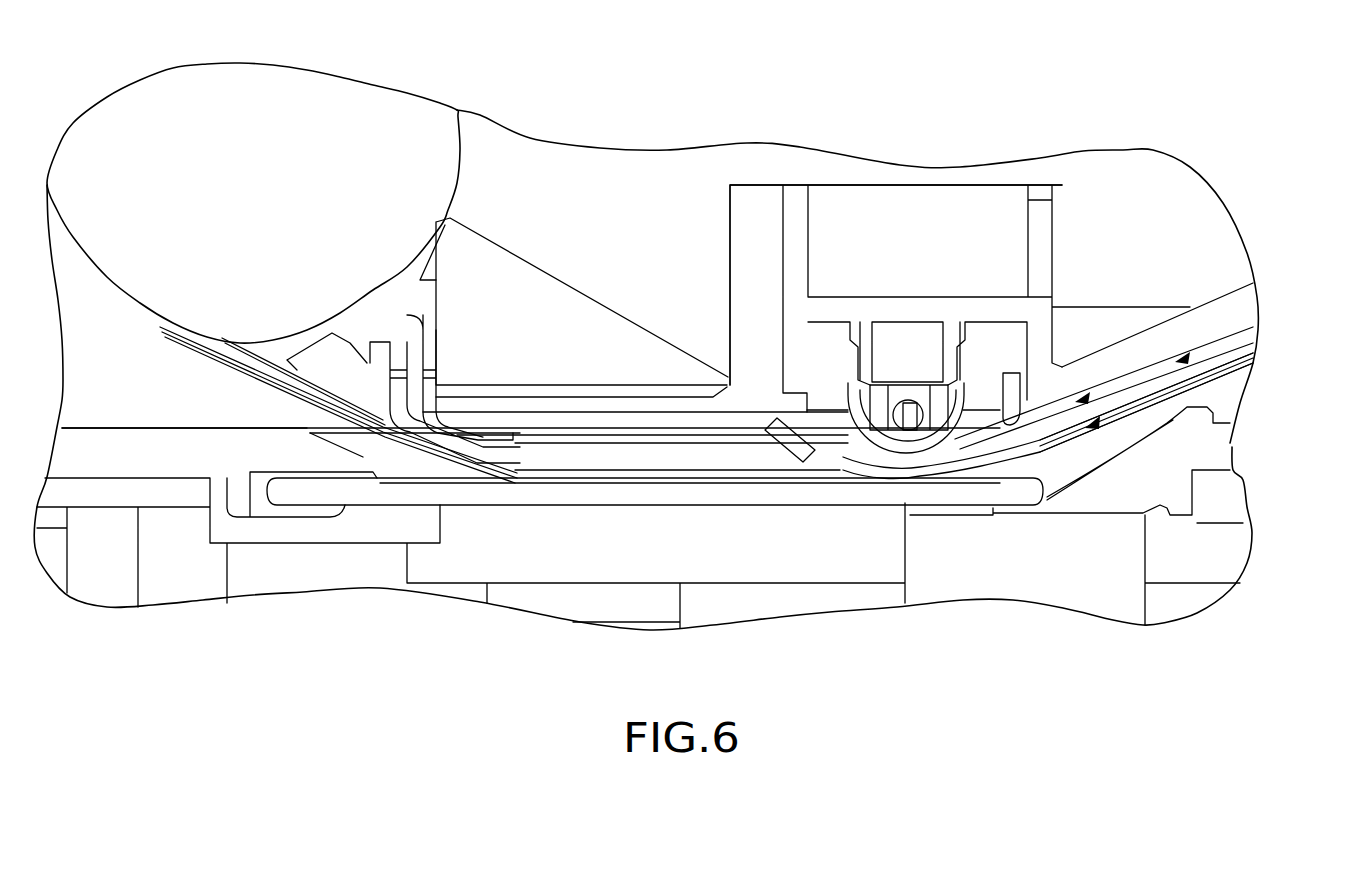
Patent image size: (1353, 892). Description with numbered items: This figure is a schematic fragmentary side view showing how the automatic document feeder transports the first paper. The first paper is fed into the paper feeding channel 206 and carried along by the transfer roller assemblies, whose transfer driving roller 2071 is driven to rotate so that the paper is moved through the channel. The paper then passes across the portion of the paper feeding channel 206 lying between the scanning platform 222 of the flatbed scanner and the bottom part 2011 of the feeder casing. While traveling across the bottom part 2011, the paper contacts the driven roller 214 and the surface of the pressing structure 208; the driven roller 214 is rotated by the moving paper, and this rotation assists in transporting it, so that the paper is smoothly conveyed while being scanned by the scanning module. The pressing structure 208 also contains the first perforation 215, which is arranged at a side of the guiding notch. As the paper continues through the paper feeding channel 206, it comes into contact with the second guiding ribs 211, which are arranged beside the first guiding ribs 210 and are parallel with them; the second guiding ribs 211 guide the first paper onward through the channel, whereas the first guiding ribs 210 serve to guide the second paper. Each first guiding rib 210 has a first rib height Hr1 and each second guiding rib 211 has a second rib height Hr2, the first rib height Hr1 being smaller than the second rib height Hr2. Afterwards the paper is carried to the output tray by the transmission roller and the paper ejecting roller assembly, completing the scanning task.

The transfer driving roller 2071 is at (118, 122).
The bottom part of the feeder casing 2011 is at (848, 305).
The second guiding ribs 211 is at (1127, 393).
The first guiding ribs 210 is at (1217, 350).
The first rib height Hr1 is at (1227, 370).
The second rib height Hr2 is at (1112, 403).
The first perforation 215 is at (930, 470).
The driven roller 214 is at (1040, 455).
The paper feeding channel 206 is at (372, 449).
The scanning platform 222 is at (433, 492).
The pressing structure 208 is at (800, 458).